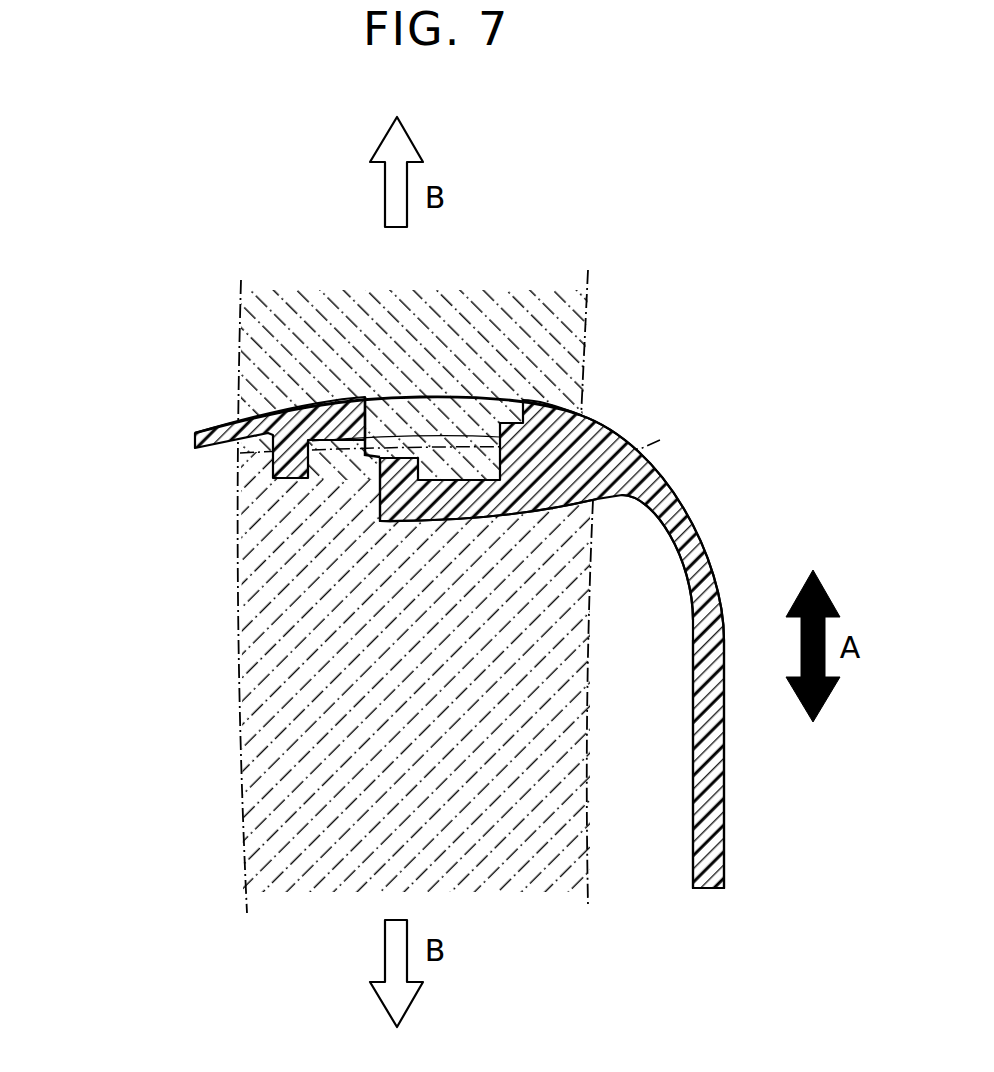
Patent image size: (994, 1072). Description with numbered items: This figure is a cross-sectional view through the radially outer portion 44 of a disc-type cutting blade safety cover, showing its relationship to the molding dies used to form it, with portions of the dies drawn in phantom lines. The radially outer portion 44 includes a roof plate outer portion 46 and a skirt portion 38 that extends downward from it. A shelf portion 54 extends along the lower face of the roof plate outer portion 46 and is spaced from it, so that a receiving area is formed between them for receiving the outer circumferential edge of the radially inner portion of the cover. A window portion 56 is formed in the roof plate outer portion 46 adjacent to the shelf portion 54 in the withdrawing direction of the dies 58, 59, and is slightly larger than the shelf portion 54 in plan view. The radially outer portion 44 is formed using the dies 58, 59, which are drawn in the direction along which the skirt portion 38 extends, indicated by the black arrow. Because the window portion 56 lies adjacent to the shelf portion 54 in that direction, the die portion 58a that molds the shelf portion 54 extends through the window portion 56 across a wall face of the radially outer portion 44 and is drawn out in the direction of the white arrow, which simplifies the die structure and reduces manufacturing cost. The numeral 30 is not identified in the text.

The lens 30 is at (592, 360).
The skirt portion 38 is at (727, 752).
The radially outer portion 44 is at (690, 508).
The roof plate outer portion 46 is at (340, 400).
The shelf portion 54 is at (442, 503).
The window portion 56 is at (497, 397).
The molding die 58 is at (240, 378).
The die portion 58a is at (465, 429).
The molding die 59 is at (287, 778).